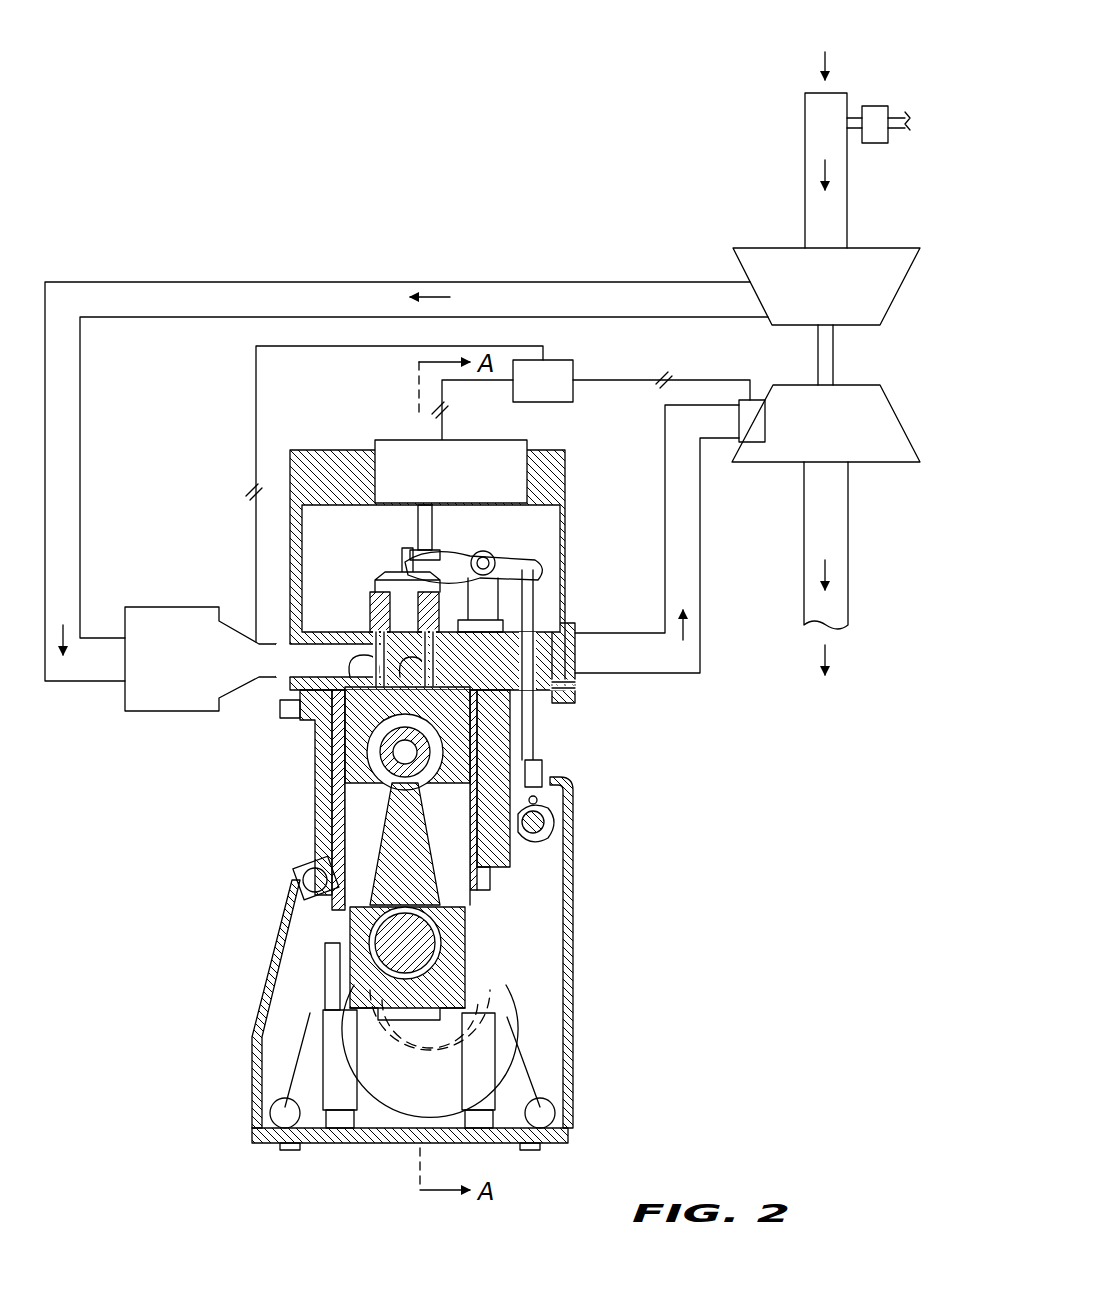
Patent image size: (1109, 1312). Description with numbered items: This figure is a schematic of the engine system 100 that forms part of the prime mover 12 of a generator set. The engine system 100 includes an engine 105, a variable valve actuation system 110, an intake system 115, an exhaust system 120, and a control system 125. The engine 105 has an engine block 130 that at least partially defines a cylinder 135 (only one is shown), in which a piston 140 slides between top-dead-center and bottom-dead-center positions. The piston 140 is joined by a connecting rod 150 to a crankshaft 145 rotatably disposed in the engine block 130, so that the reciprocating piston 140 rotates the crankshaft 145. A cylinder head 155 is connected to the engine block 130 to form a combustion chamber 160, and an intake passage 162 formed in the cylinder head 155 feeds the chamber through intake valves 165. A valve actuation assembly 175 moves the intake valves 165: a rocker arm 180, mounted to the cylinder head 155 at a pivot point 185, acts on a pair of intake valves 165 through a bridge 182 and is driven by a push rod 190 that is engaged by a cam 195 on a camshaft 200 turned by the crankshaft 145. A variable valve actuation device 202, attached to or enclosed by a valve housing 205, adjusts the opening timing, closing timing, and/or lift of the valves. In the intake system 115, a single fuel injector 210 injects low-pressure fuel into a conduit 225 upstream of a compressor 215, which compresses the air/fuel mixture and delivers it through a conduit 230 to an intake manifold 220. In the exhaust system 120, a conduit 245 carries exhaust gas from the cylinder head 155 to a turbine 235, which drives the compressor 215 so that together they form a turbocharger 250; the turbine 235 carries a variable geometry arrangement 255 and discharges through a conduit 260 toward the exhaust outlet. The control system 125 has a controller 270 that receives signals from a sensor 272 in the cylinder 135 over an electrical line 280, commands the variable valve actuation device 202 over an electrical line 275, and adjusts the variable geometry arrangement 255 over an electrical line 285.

The prime mover 12 is at (178, 180).
The engine system 100 is at (298, 130).
The engine 105 is at (278, 842).
The variable valve actuation system 110 is at (380, 417).
The intake system 115 is at (675, 160).
The exhaust system 120 is at (720, 482).
The control system 125 is at (603, 365).
The engine block 130 is at (322, 787).
The cylinder 135 is at (350, 836).
The piston 140 is at (319, 760).
The crankshaft 145 is at (492, 1003).
The connecting rod 150 is at (417, 870).
The cylinder head 155 is at (565, 682).
The combustion chamber 160 is at (448, 777).
The intake passage 162 is at (350, 660).
The intake valve 165 is at (405, 610).
The valve actuation assembly 175 is at (540, 548).
The rocker arm 180 is at (565, 527).
The bridge 182 is at (394, 571).
The pivot point 185 is at (491, 549).
The push rod 190 is at (548, 745).
The cam 195 is at (550, 839).
The camshaft 200 is at (553, 815).
The variable valve actuation device 202 is at (451, 471).
The valve housing 205 is at (320, 457).
The fuel injector 210 is at (870, 100).
The compressor 215 is at (765, 264).
The intake manifold 220 is at (202, 659).
The conduit 225 is at (823, 208).
The conduit 230 is at (539, 290).
The turbine 235 is at (875, 408).
The conduit 245 is at (675, 575).
The turbocharger 250 is at (812, 347).
The variable geometry arrangement 255 is at (752, 400).
The conduit 260 is at (832, 577).
The controller 270 is at (543, 381).
The sensor 272 is at (288, 718).
The electrical line 275 is at (488, 385).
The electrical line 280 is at (256, 450).
The electrical line 285 is at (692, 379).